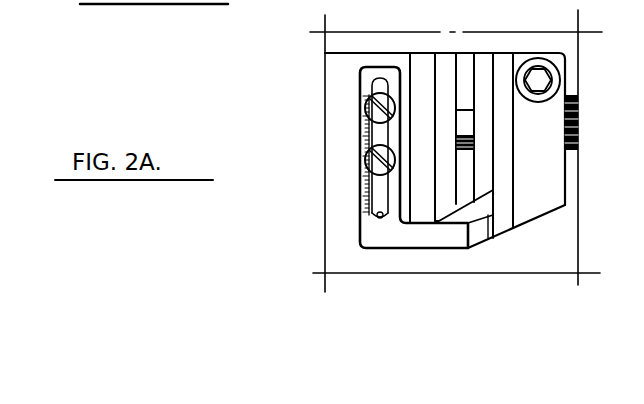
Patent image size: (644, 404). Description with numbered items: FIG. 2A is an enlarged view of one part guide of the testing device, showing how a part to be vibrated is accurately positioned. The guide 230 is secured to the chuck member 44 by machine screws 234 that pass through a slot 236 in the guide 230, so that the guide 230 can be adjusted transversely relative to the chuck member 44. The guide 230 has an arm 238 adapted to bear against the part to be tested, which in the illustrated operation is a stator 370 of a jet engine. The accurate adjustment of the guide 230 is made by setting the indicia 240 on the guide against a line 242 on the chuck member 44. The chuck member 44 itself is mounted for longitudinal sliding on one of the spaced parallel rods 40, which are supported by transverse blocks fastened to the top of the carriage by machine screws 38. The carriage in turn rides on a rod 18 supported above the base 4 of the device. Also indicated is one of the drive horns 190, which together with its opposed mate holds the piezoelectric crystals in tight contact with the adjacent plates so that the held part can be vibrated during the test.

The base 4 is at (395, 44).
The spaced parallel rod 40 is at (465, 108).
The machine screw 38 is at (550, 80).
The rod 18 is at (573, 113).
The guide 230 is at (367, 78).
The machine screw 234 is at (367, 148).
The line 242 is at (356, 156).
The setting indicia 240 is at (363, 188).
The slot 236 is at (377, 217).
The chuck member 44 is at (370, 262).
The arm 238 is at (422, 232).
The stator 370 is at (490, 213).
The drive horn 190 is at (541, 263).